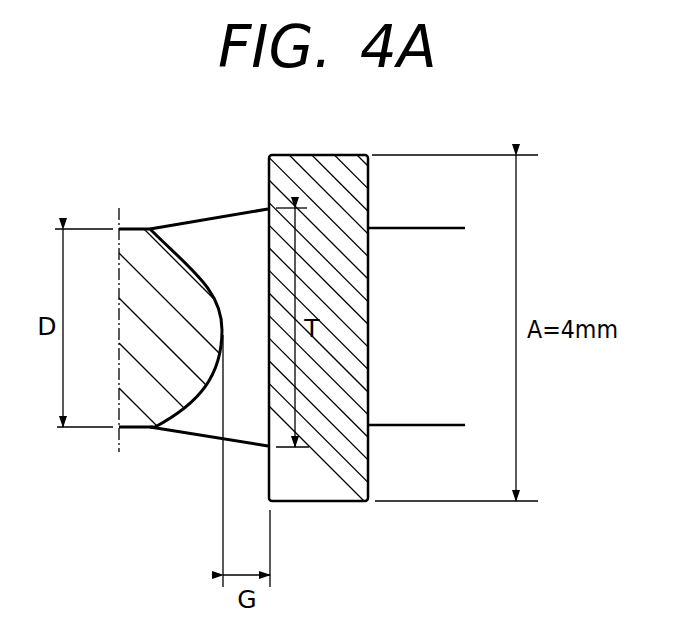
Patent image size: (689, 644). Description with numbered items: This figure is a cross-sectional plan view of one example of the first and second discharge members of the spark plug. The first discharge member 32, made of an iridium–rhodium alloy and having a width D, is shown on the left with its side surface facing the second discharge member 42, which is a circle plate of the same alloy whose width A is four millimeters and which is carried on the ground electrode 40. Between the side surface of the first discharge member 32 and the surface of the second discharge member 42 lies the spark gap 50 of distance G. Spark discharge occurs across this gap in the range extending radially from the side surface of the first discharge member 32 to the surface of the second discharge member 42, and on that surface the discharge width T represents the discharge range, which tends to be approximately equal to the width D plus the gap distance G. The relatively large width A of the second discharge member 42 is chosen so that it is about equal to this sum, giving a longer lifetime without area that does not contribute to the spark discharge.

The first discharge member 32 is at (147, 421).
The ground electrode 40 is at (433, 427).
The second discharge member 42 is at (335, 153).
The spark gap 50 is at (233, 242).